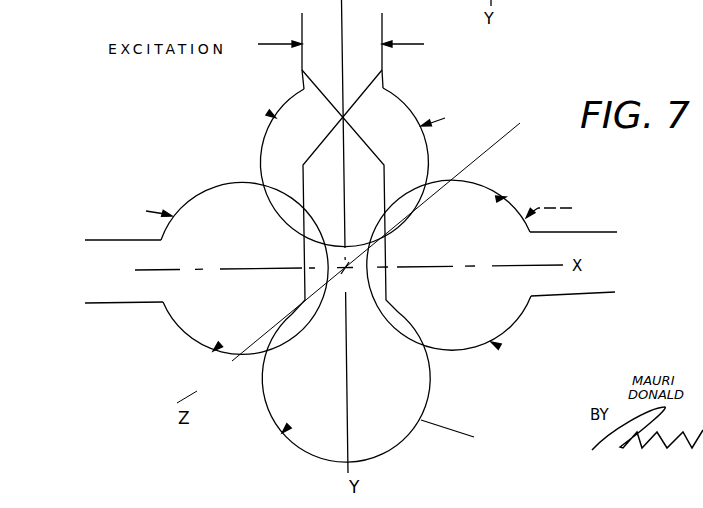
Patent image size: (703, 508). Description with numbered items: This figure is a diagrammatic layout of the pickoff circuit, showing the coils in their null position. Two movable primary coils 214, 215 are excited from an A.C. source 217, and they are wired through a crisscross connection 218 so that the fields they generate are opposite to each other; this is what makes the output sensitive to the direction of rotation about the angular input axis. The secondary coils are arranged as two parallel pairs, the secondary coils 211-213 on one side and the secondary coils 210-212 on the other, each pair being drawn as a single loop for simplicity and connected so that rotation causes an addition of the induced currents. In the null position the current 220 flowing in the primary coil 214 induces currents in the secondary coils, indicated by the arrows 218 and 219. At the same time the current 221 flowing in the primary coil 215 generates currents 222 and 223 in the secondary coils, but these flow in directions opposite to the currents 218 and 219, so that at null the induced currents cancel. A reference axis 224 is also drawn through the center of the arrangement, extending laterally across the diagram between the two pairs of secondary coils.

The A.C. source 217 is at (384, 17).
The primary coil 214 is at (400, 90).
The primary coil 215 is at (398, 447).
The crisscross connection 218 is at (327, 101).
The current 220 is at (270, 111).
The current 221 is at (289, 426).
The current 222 is at (232, 327).
The current 223 is at (499, 345).
The current 219 is at (498, 199).
The X axis 224 is at (524, 263).
The secondary coils 210-212 is at (520, 320).
The secondary coils 211-213 is at (187, 337).